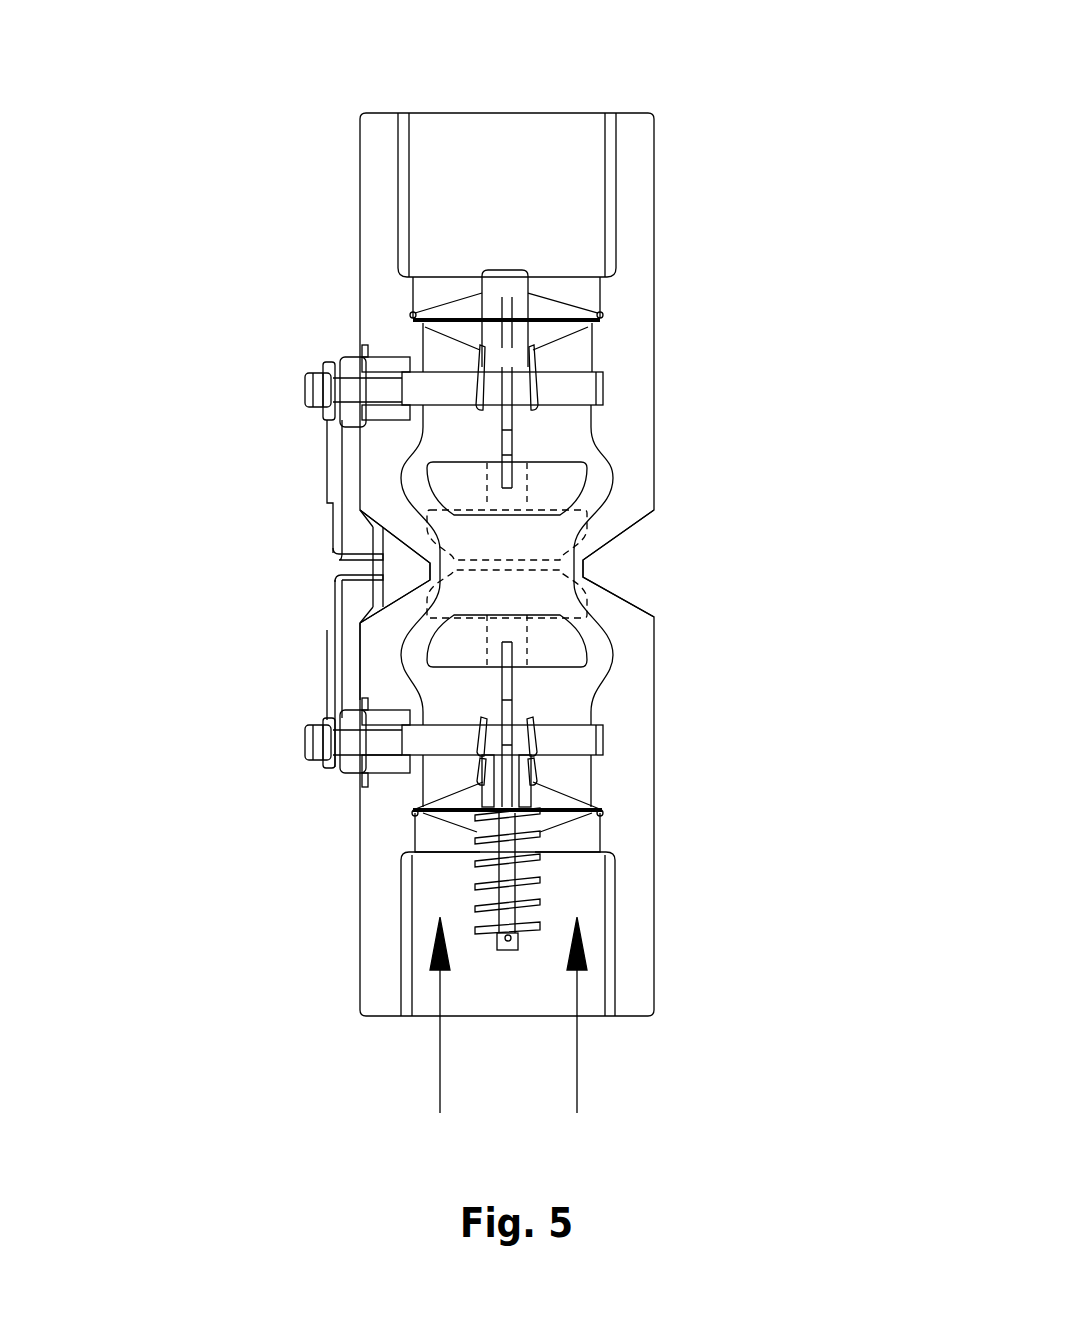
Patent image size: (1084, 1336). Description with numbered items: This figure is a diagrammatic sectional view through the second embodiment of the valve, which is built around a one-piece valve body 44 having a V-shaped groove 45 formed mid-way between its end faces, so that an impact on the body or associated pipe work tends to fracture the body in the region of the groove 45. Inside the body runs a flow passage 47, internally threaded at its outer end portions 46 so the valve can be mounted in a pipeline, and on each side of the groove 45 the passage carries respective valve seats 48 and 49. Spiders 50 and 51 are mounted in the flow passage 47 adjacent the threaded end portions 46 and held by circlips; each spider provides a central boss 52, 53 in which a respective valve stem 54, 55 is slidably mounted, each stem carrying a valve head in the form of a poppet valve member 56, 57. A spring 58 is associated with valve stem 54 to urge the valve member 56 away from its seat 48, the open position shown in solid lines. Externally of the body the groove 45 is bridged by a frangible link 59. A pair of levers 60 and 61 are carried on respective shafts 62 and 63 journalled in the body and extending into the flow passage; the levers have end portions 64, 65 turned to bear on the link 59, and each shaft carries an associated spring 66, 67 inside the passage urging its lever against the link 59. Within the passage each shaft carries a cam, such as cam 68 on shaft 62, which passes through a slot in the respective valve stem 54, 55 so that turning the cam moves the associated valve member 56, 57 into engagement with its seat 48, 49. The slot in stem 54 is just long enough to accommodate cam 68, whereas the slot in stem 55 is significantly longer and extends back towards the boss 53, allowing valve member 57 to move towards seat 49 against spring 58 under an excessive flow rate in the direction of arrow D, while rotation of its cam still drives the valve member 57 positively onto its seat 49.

The valve body 44 is at (633, 290).
The V-shaped groove 45 is at (620, 537).
The outer end portions 46 is at (607, 128).
The flow passage 47 is at (593, 673).
The valve seat 48 is at (607, 500).
The valve seat 49 is at (617, 637).
The spider 50 is at (472, 310).
The spider 51 is at (553, 818).
The central boss 52 is at (497, 282).
The central boss 53 is at (557, 780).
The valve stem 54 is at (518, 415).
The valve stem 55 is at (527, 920).
The poppet valve member 56 is at (457, 481).
The poppet valve member 57 is at (452, 650).
The spring 58 is at (540, 900).
The frangible link 59 is at (375, 538).
The lever 60 is at (327, 427).
The lever 61 is at (328, 678).
The shaft 62 is at (323, 367).
The shaft 63 is at (378, 742).
The end portion 64 is at (340, 558).
The end portion 65 is at (342, 577).
The spring 66 is at (540, 393).
The spring 67 is at (540, 727).
The cam 68 is at (513, 425).
The arrow D is at (527, 1034).